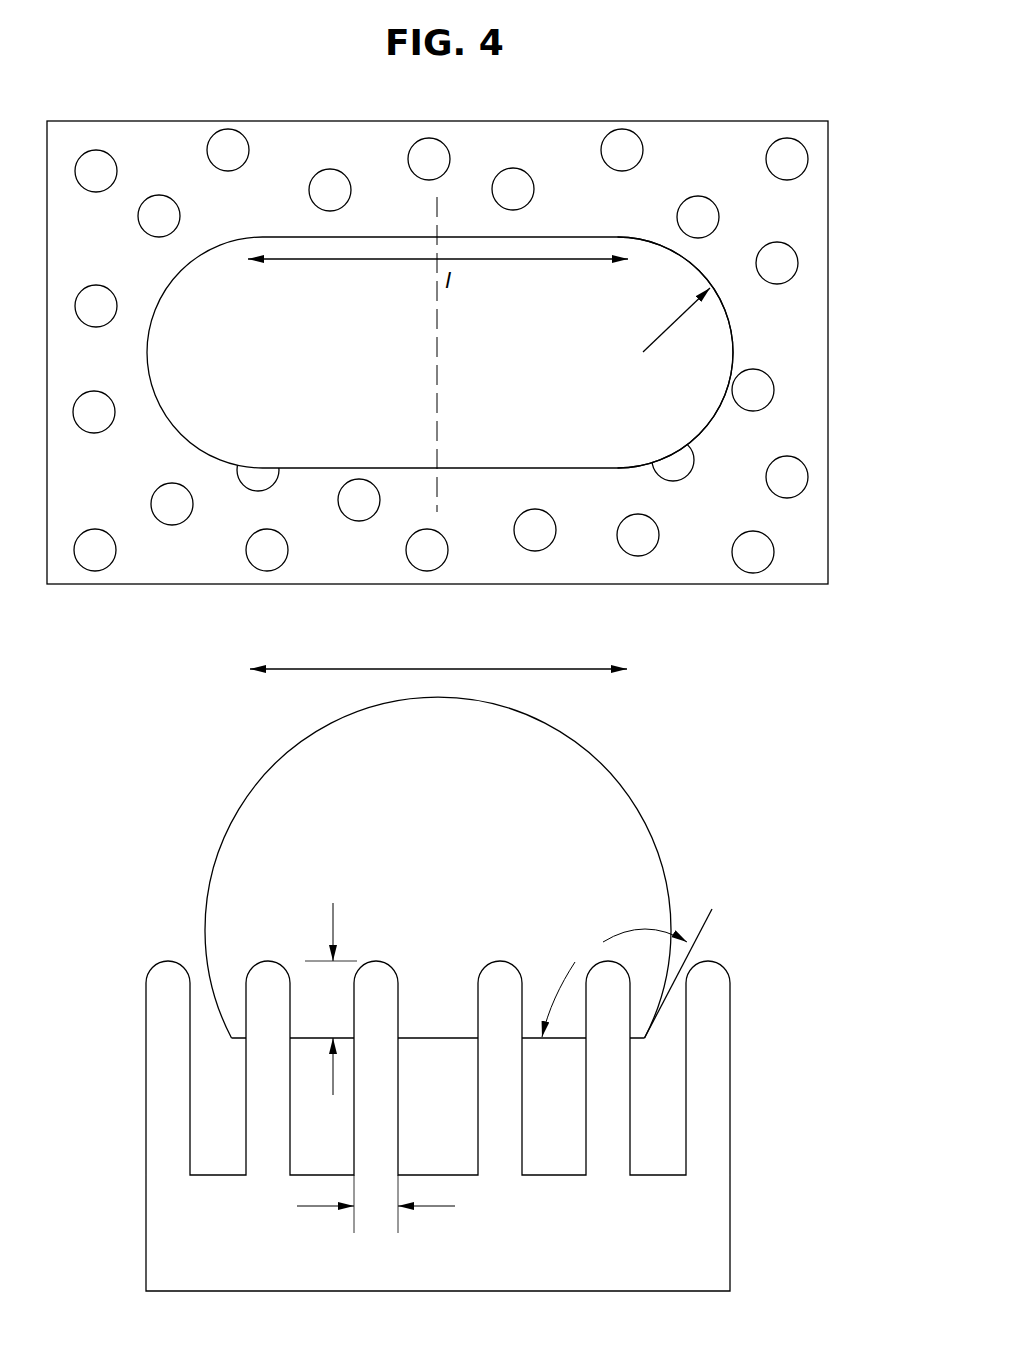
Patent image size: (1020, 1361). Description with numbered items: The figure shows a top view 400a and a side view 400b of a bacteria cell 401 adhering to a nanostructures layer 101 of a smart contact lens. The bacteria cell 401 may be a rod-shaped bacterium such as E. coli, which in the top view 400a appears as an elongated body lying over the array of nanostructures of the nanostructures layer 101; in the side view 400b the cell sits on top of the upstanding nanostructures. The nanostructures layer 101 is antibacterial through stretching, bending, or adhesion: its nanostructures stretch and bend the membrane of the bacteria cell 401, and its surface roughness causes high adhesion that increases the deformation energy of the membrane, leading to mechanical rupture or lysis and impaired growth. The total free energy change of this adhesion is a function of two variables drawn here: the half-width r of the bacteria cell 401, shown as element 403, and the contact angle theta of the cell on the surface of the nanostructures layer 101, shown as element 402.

The top view 400a is at (118, 83).
The side view 400b is at (758, 728).
The nanostructures layer 101 is at (758, 393).
The bacteria cell 401 is at (295, 428).
The contact angle 402 is at (600, 927).
The half-width 403 is at (717, 281).